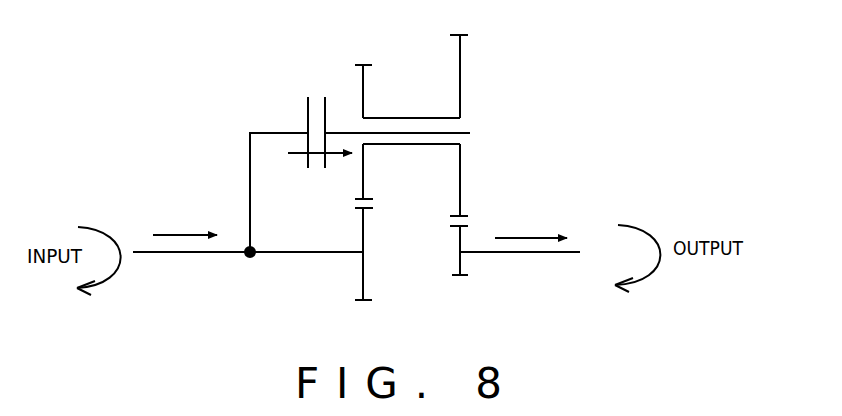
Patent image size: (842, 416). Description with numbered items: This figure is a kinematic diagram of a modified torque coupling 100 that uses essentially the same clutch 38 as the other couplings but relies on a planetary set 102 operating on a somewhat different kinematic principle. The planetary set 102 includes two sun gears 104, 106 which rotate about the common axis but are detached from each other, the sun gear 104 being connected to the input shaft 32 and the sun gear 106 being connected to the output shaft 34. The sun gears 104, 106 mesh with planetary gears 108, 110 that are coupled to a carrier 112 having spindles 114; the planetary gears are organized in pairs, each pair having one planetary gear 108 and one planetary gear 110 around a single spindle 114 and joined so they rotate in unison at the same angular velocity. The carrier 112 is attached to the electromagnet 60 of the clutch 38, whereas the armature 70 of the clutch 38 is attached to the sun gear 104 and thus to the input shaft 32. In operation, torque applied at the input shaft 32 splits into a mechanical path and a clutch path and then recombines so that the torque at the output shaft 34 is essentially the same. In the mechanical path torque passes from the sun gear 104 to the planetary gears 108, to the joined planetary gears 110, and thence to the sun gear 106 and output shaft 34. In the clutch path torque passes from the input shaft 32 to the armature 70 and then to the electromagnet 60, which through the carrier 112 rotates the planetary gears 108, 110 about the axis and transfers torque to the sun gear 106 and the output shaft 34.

The modified coupling 100 is at (213, 130).
The input shaft 32 is at (203, 253).
The output shaft 34 is at (520, 253).
The clutch 38 is at (317, 163).
The electromagnet 60 is at (325, 92).
The armature 70 is at (308, 97).
The planetary set 102 is at (510, 128).
The sun gear 104 is at (362, 273).
The sun gear 106 is at (462, 260).
The planetary gear 108 is at (363, 82).
The planetary gear 110 is at (460, 58).
The carrier 112 is at (350, 130).
The spindle 114 is at (415, 118).